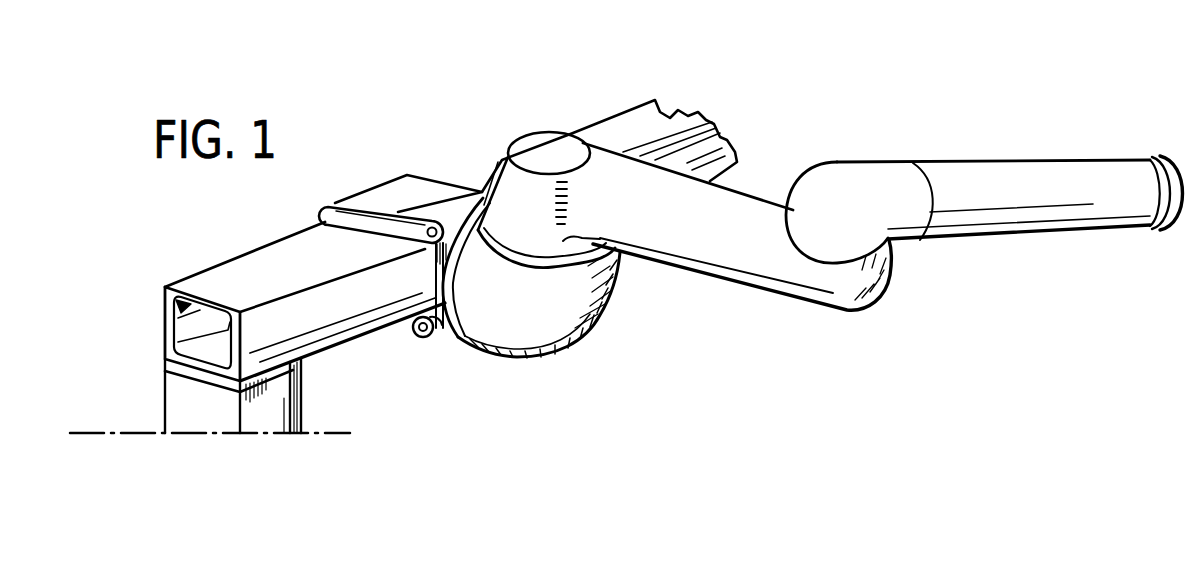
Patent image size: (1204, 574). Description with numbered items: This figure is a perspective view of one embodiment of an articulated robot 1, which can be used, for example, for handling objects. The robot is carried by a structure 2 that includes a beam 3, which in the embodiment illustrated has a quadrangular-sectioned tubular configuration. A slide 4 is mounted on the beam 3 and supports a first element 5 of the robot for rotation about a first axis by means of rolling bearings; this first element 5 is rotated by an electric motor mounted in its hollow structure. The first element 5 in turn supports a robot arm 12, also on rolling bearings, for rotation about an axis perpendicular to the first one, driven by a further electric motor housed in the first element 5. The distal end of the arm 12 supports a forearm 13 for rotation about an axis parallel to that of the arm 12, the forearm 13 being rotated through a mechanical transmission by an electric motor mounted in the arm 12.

The articulated robot 1 is at (355, 177).
The structure 2 is at (224, 259).
The beam 3 is at (337, 322).
The slide 4 is at (418, 180).
The first element 5 is at (600, 295).
The robot arm 12 is at (753, 208).
The forearm 13 is at (1088, 190).